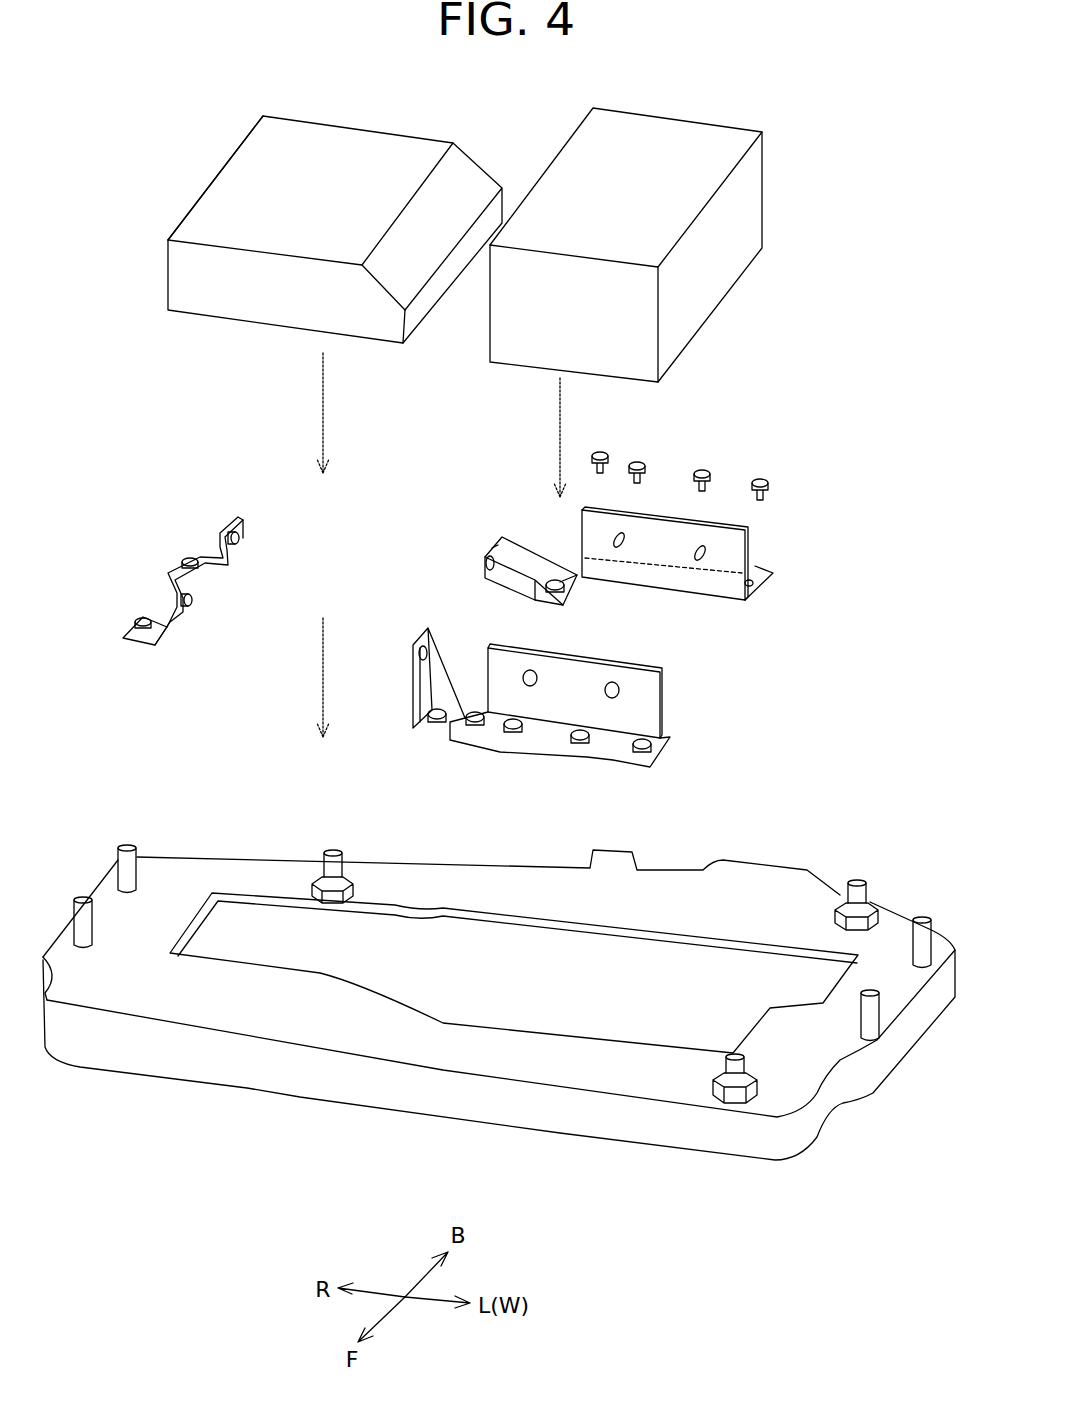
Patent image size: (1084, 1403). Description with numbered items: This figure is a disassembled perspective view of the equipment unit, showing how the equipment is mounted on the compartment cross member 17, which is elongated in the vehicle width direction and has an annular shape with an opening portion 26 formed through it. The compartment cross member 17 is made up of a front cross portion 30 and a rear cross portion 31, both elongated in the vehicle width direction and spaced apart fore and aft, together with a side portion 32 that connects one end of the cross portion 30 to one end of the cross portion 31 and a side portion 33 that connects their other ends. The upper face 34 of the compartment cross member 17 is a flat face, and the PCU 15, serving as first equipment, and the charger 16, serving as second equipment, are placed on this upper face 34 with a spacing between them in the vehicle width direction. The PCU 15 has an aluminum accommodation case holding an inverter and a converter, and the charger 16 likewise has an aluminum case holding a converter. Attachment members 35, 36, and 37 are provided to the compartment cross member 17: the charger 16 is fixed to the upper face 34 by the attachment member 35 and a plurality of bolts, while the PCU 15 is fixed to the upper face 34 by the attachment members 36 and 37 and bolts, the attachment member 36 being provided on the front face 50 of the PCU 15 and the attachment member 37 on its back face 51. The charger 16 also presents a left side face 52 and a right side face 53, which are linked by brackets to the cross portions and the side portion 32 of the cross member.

The PCU (first equipment) 15 is at (656, 243).
The charger (second equipment) 16 is at (303, 208).
The compartment cross member 17 is at (499, 981).
The opening portion 26 is at (687, 988).
The cross portion 30 is at (563, 1068).
The cross portion 31 is at (480, 888).
The side portion 32 is at (168, 930).
The side portion 33 is at (896, 1010).
The upper face 34 is at (563, 898).
The attachment member (second attachment member) 35 is at (204, 478).
The attachment member (first attachment member) 36 is at (662, 721).
The attachment member (first attachment member) 37 is at (750, 595).
The front face 50 is at (642, 352).
The back face 51 is at (763, 197).
The left side face 52 is at (457, 265).
The right side face 53 is at (197, 202).